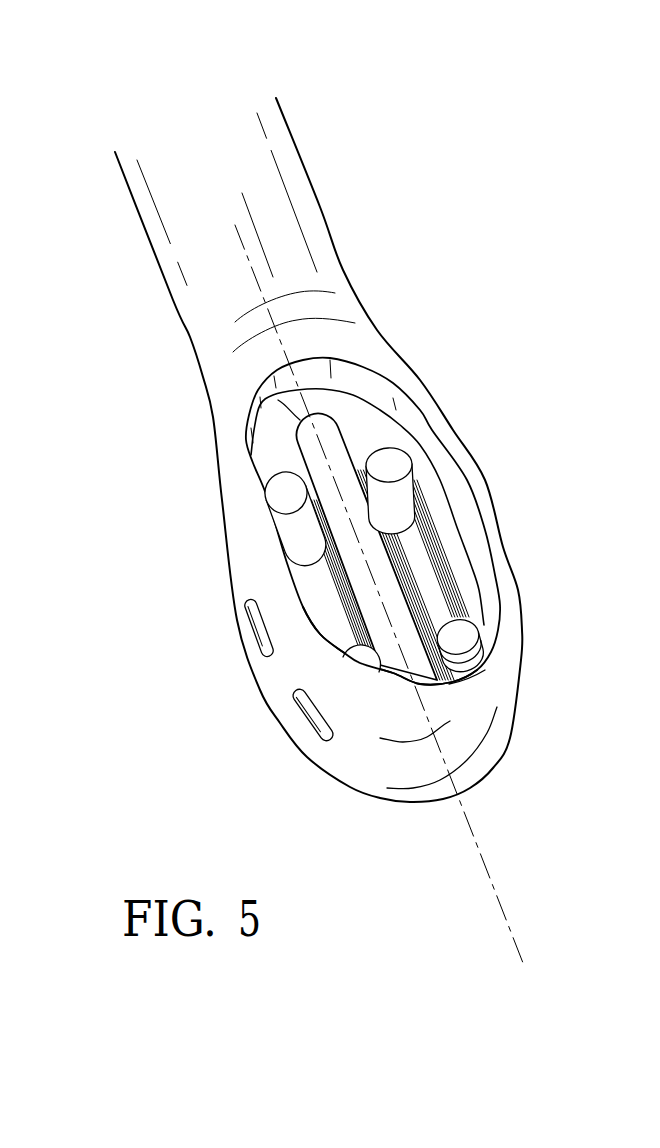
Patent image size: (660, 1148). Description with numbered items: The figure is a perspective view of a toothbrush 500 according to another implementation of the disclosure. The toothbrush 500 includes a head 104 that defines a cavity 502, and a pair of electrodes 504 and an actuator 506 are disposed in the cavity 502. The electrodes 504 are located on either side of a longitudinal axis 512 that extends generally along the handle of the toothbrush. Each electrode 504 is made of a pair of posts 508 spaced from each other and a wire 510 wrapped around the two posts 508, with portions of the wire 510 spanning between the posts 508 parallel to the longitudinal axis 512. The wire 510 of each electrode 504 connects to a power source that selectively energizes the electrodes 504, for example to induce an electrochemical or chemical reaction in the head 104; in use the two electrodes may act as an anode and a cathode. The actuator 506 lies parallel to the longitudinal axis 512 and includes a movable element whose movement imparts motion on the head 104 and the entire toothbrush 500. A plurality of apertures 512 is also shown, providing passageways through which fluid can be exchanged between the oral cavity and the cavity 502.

The head 104 is at (508, 800).
The toothbrush 500 is at (429, 300).
The cavity 502 is at (372, 412).
The electrodes 504 is at (330, 567).
The actuator 506 is at (397, 673).
The posts 508 is at (285, 489).
The wire 510 is at (305, 583).
The longitudinal axis 512 is at (250, 620).